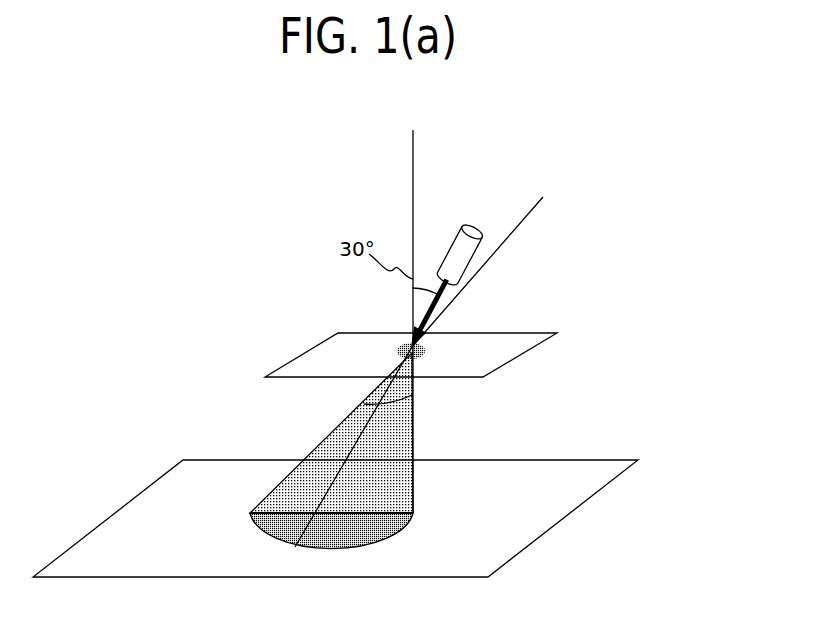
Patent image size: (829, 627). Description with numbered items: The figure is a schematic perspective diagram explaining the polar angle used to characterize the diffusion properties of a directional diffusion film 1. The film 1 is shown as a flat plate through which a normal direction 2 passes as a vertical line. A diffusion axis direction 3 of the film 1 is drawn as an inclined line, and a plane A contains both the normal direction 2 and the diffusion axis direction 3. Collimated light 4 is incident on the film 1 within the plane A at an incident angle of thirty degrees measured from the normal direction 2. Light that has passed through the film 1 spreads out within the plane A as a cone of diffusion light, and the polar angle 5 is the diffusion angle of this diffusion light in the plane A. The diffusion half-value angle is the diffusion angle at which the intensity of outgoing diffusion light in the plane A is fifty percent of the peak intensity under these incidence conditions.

The directional diffusion film 1 is at (330, 352).
The normal direction 2 is at (412, 202).
The diffusion axis direction 3 is at (492, 258).
The collimated light 4 is at (477, 228).
The polar angle 5 is at (365, 404).
The plane A is at (413, 440).